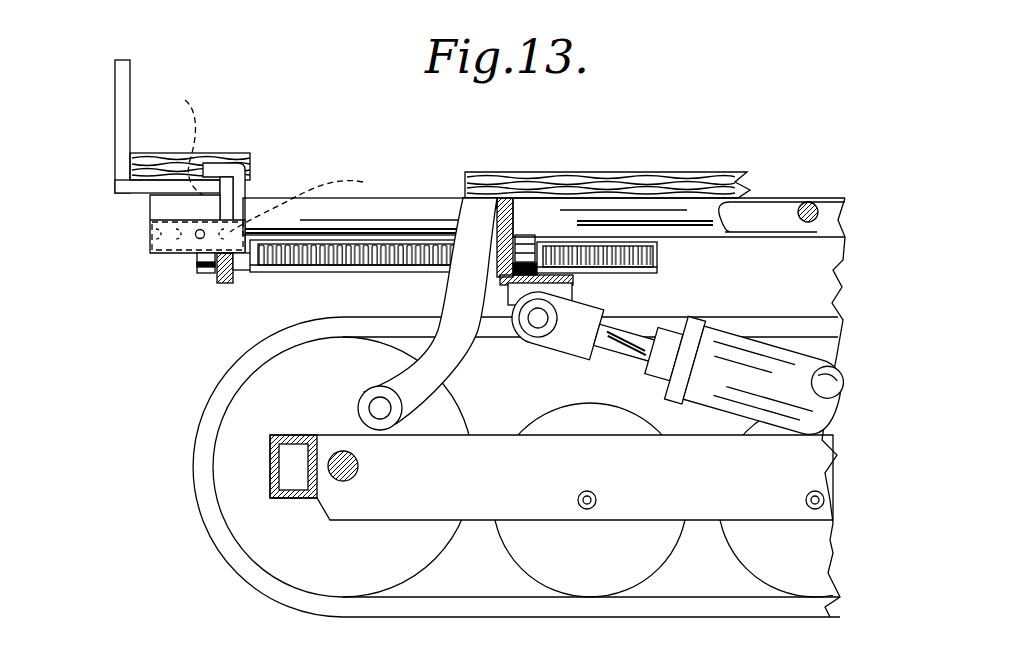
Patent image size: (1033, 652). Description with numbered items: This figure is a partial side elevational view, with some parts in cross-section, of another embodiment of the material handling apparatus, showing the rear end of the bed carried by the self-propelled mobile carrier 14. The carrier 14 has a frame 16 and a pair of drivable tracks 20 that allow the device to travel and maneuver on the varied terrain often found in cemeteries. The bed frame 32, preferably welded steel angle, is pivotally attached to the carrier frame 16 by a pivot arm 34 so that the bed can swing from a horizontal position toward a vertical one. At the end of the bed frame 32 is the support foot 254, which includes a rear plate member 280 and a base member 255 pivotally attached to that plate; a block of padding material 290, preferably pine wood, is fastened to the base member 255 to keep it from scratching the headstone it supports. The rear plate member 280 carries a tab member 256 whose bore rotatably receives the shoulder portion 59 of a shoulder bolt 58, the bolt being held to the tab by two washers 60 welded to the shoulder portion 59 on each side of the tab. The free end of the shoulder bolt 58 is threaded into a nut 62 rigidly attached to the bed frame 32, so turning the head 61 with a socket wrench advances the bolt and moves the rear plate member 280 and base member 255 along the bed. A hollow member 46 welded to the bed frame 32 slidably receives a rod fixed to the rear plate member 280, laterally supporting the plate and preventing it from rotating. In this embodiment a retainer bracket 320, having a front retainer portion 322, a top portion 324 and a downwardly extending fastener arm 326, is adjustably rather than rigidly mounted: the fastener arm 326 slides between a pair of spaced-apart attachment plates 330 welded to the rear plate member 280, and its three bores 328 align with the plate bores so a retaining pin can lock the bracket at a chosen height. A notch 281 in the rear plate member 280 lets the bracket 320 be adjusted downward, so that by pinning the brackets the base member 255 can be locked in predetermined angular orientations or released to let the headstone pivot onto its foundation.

The mobile carrier 14 is at (185, 423).
The carrier frame 16 is at (513, 490).
The drivable tracks 20 is at (238, 550).
The bed frame 32 is at (530, 205).
The pivot arm 34 is at (443, 357).
The hollow member 46 is at (653, 203).
The shoulder bolt 58 is at (340, 258).
The shoulder portion 59 is at (242, 265).
The washers 60 is at (213, 283).
The head 61 is at (197, 270).
The nut 62 is at (530, 238).
The support foot 254 is at (95, 86).
The base member 255 is at (128, 72).
The tab member 256 is at (225, 273).
The rear plate member 280 is at (157, 205).
The notch 281 is at (176, 146).
The padding material 290 is at (147, 155).
The retainer bracket 320 is at (258, 183).
The front retainer portion 322 is at (213, 167).
The top portion 324 is at (243, 197).
The fastener arm 326 is at (150, 225).
The bores 328 is at (103, 265).
The attachment plates 330 is at (180, 245).